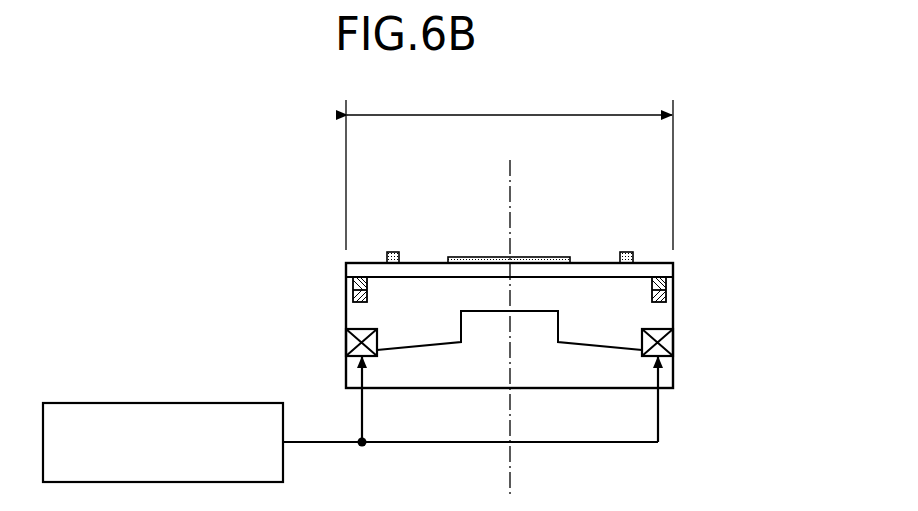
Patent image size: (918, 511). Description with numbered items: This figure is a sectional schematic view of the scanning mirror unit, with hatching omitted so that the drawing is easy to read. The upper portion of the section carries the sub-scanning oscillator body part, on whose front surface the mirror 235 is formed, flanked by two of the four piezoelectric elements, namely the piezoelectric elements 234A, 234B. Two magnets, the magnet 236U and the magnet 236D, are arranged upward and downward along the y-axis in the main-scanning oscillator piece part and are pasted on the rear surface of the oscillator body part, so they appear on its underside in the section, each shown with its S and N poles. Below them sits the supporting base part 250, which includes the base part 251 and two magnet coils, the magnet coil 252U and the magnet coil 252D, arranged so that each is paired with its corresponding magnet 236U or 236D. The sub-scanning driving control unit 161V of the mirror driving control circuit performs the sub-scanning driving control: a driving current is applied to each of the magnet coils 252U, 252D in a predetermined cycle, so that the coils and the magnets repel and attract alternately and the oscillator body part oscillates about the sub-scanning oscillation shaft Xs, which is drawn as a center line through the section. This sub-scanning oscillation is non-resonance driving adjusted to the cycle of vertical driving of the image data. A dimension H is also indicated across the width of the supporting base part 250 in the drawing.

The sub-scanning driving control unit 161V is at (172, 402).
The piezoelectric element 234A is at (626, 251).
The piezoelectric element 234B is at (393, 251).
The mirror 235 is at (553, 256).
The magnet 236D is at (353, 283).
The magnet 236U is at (666, 283).
The supporting base part 250 is at (509, 349).
The base part 251 is at (443, 365).
The magnet coil 252D is at (346, 342).
The magnet coil 252U is at (673, 342).
The width dimension H is at (509, 168).
The sub-scanning oscillation shaft Xs is at (508, 316).